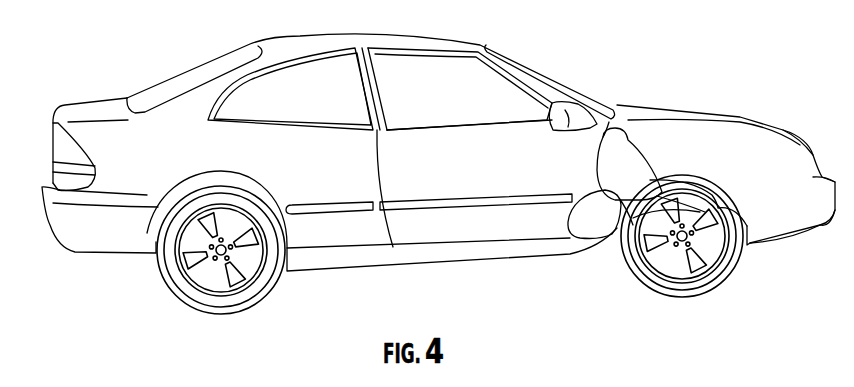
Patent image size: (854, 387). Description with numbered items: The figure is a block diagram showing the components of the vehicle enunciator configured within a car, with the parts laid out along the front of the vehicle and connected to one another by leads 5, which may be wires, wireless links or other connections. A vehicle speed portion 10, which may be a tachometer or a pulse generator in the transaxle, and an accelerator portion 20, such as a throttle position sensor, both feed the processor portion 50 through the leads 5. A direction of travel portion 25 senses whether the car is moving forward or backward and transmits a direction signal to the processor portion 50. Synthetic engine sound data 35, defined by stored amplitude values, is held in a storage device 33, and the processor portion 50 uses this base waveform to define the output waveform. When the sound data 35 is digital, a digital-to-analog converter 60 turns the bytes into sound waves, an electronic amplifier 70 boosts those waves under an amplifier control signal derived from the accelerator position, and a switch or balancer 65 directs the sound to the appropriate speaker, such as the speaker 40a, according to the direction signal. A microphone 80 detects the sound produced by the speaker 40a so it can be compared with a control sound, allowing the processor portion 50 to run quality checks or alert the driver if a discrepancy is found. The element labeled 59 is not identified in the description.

The leads 5 is at (795, 202).
The vehicle speed portion 10 is at (675, 200).
The accelerator portion 20 is at (629, 164).
The direction of travel portion 25 is at (587, 207).
The storage device 33 is at (772, 131).
The sound data 35 is at (685, 128).
The speaker 40a is at (792, 215).
The processor portion 50 is at (732, 122).
The headlamp bracket 59 is at (715, 149).
The digital-to-analog converter 60 is at (739, 162).
The switch or balancer 65 is at (824, 196).
The electronic amplifier 70 is at (772, 184).
The microphone 80 is at (812, 155).